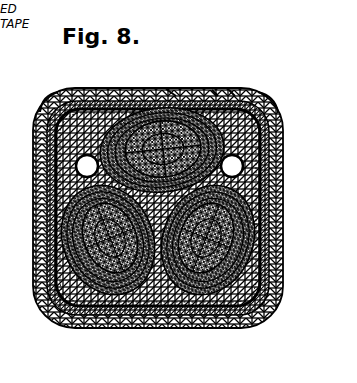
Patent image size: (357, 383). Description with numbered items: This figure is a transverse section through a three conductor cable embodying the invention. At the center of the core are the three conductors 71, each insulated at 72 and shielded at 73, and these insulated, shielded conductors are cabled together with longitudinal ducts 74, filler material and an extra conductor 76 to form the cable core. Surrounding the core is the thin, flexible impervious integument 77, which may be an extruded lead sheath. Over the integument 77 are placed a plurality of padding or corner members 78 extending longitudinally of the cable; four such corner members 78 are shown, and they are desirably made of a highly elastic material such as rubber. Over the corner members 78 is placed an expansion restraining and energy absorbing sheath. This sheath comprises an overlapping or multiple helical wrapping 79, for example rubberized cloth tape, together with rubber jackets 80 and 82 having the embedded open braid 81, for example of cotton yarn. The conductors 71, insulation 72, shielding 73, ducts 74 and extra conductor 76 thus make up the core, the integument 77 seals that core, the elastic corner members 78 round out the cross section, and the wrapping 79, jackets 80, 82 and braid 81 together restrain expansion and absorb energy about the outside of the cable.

The conductors 71 is at (134, 128).
The insulation 72 is at (48, 236).
The shield 73 is at (53, 216).
The longitudinal ducts 74 is at (50, 170).
The extra conductor 76 is at (156, 328).
The thin, flexible impervious integument 77 is at (286, 243).
The padding or corner members 78 is at (36, 123).
The overlapping or multiple helical wrapping 79 is at (59, 92).
The rubber jacket 80 is at (262, 108).
The embedded open braid 81 is at (232, 89).
The rubber jacket 82 is at (171, 88).